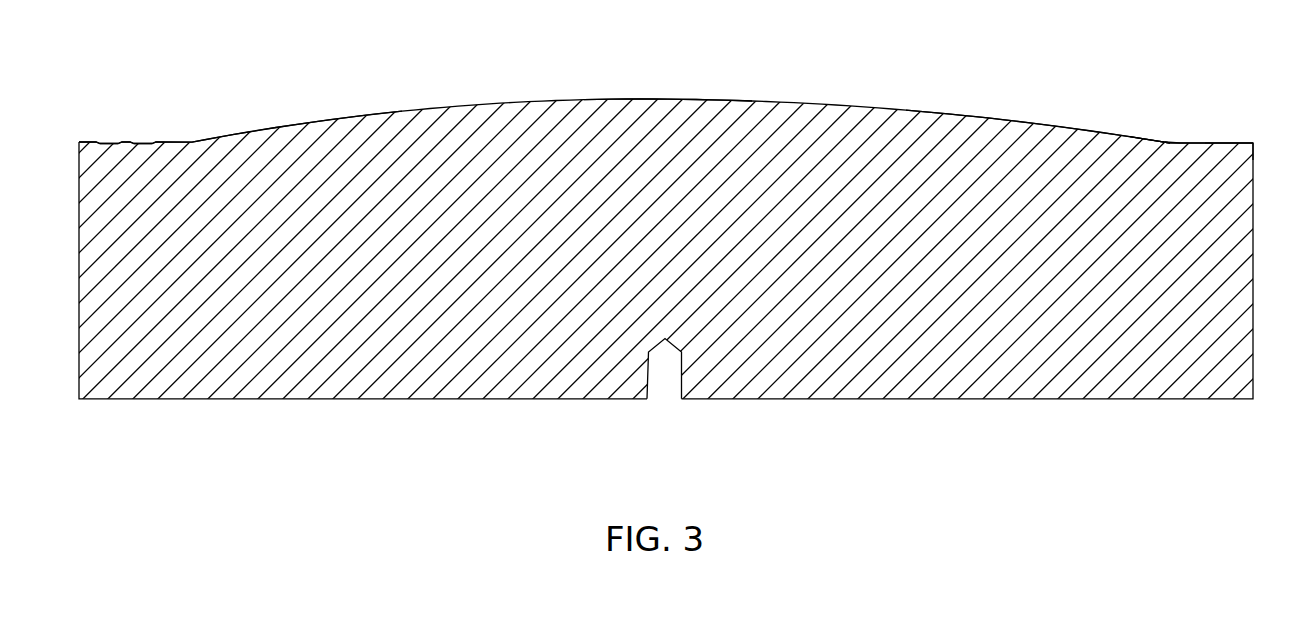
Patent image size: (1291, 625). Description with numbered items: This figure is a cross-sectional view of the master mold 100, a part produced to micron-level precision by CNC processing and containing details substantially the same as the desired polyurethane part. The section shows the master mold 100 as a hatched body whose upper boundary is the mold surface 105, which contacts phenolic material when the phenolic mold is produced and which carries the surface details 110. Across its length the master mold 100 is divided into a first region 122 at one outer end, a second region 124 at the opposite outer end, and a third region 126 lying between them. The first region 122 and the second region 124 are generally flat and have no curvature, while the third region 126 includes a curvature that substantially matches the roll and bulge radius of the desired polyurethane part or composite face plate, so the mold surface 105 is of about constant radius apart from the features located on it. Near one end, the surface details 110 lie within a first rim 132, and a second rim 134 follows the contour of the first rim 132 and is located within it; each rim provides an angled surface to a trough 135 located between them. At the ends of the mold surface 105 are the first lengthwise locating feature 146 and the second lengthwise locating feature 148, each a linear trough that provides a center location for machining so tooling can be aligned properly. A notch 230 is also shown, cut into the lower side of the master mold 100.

The master mold 100 is at (774, 443).
The mold surface 105 is at (1019, 116).
The surface details 110 is at (835, 91).
The first region 122 is at (152, 106).
The second region 124 is at (1232, 96).
The third region 126 is at (670, 69).
The first rim 132 is at (1190, 143).
The second rim 134 is at (1155, 141).
The trough 135 is at (1172, 143).
The first lengthwise locating feature 146 is at (108, 142).
The second lengthwise locating feature 148 is at (1228, 143).
The notch 230 is at (649, 399).